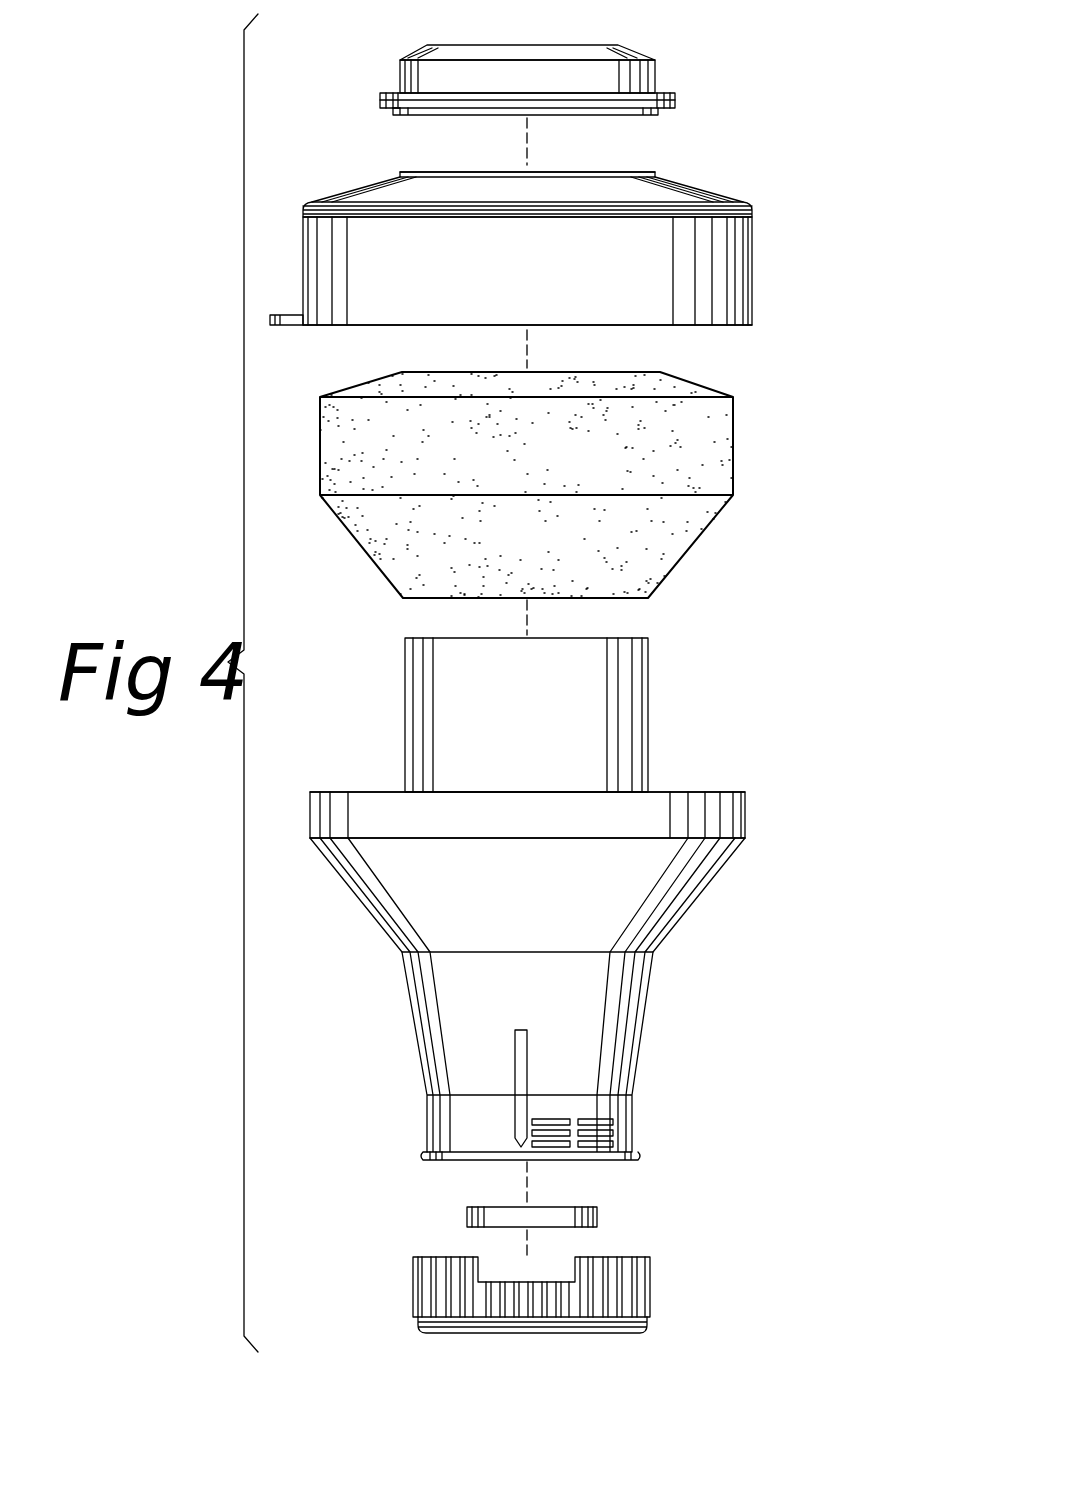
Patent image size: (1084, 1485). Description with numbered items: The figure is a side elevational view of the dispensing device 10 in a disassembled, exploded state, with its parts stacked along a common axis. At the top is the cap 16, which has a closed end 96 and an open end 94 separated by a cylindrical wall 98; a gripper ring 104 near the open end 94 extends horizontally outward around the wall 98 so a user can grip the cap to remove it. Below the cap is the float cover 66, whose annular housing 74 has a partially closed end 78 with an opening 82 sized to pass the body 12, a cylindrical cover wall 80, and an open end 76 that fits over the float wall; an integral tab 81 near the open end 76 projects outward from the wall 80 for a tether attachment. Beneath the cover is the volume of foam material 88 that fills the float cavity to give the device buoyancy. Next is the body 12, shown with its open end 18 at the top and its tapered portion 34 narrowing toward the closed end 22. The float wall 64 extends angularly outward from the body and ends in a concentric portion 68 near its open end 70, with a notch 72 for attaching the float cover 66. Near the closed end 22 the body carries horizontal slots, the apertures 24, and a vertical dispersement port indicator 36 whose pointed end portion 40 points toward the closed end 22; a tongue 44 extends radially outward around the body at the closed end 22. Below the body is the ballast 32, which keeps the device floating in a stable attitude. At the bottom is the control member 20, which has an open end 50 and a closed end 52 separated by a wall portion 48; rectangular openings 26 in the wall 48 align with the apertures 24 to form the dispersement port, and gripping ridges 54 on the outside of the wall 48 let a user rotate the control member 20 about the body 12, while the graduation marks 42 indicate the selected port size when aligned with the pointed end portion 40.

The dispensing device 10 is at (564, 223).
The body 12 is at (652, 700).
The cap 16 is at (522, 64).
The open end 18 is at (560, 924).
The control member 20 is at (527, 1290).
The closed end 22 is at (630, 1158).
The apertures 24 is at (600, 1128).
The openings 26 is at (480, 1272).
The ballast 32 is at (598, 1212).
The tapered portion 34 is at (640, 1000).
The dispersement port indicators 36 is at (531, 1060).
The pointed end portion 40 is at (522, 1148).
The graduation marks 42 is at (490, 1302).
The tongue 44 is at (428, 1157).
The wall portion 48 is at (636, 1286).
The open end 50 is at (630, 1262).
The closed end 52 is at (560, 1332).
The gripping ridges 54 is at (435, 1278).
The float wall 64 is at (690, 890).
The float cover 66 is at (716, 194).
The concentric portion 68 is at (746, 816).
The open end 70 is at (741, 795).
The notch 72 is at (744, 840).
The annular housing 74 is at (350, 207).
The open end 76 is at (742, 327).
The partially closed end 78 is at (399, 176).
The cylindrical cover wall 80 is at (757, 268).
The tab 81 is at (272, 312).
The opening 82 is at (665, 171).
The foam material 88 is at (725, 450).
The open end 94 is at (642, 116).
The closed end 96 is at (470, 28).
The cylindrical wall 98 is at (404, 68).
The gripper ring 104 is at (396, 78).